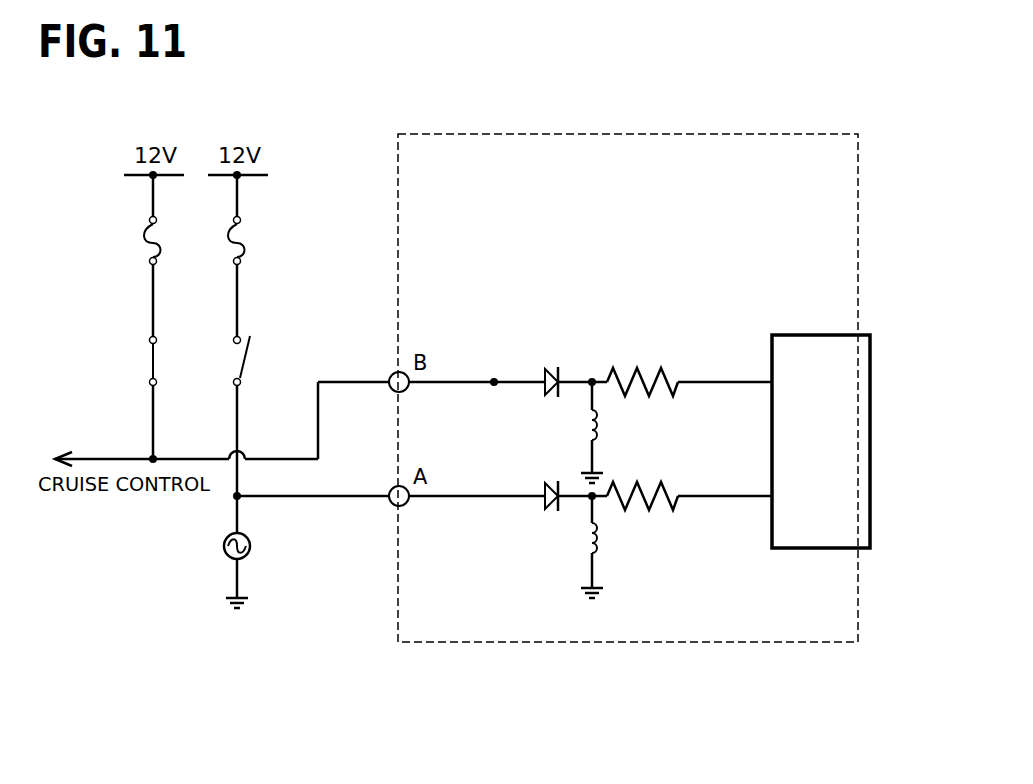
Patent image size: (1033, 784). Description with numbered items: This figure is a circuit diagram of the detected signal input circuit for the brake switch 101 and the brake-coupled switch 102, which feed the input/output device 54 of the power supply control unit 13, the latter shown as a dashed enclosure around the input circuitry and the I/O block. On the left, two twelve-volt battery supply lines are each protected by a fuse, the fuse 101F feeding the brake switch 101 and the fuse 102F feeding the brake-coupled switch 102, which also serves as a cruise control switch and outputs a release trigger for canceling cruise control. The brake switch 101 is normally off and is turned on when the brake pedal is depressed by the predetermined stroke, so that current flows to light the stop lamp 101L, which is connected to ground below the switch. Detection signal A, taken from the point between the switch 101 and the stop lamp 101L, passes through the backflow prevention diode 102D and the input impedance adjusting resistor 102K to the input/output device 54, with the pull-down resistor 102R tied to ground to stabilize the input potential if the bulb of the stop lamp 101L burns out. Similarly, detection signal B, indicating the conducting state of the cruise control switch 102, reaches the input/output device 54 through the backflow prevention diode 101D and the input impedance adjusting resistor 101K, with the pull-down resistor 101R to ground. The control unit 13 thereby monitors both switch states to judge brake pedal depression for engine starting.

The power supply control unit 13 is at (796, 134).
The input/output device 54 is at (833, 335).
The brake switch 101 is at (245, 356).
The brake-coupled switch 102 is at (156, 362).
The fuse 101F is at (240, 242).
The fuse 102F is at (156, 242).
The backflow prevention diode 101D is at (548, 368).
The backflow prevention diode 102D is at (550, 508).
The input impedance adjusting resistor 101K is at (663, 372).
The input impedance adjusting resistor 102K is at (663, 487).
The pull-down resistor 101R is at (600, 415).
The pull-down resistor 102R is at (600, 530).
The stop lamp 101L is at (250, 548).